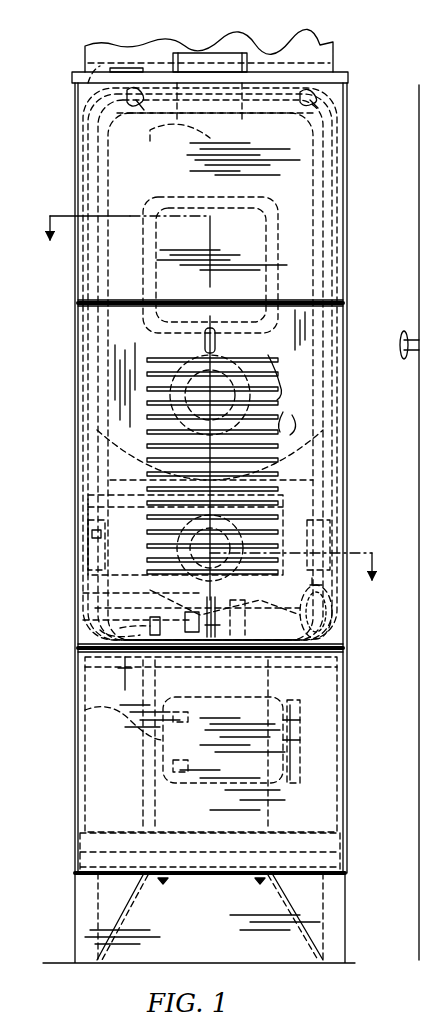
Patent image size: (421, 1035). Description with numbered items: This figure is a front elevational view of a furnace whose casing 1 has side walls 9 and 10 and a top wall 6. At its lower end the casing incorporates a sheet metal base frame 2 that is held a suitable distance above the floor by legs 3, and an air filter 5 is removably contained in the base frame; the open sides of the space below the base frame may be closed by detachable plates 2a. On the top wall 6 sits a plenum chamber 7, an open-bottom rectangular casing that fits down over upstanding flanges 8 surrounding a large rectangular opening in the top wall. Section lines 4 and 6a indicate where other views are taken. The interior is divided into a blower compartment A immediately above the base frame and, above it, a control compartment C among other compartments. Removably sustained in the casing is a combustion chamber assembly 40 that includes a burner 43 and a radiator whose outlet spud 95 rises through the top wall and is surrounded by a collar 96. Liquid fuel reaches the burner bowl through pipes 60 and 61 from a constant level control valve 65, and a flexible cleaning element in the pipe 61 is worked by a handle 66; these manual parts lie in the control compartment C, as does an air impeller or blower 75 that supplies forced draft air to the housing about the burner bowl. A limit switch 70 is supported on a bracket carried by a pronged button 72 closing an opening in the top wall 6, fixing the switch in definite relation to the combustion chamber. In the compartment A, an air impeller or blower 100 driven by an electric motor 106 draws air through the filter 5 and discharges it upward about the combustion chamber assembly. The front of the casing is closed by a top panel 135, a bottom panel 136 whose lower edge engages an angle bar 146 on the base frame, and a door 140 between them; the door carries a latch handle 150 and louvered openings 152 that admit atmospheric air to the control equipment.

The casing 1 is at (351, 266).
The base frame 2 is at (340, 882).
The plates 2a is at (200, 926).
The legs 3 is at (93, 912).
The section line 4- 4 is at (209, 414).
The air filter 5 is at (347, 846).
The top wall 6 is at (340, 20).
The section line 6a- 6a is at (347, 977).
The plenum chamber 7 is at (90, 56).
The upstanding flanges 8 is at (270, 62).
The side wall 9 is at (73, 378).
The side wall 10 is at (350, 381).
The combustion chamber assembly 40 is at (299, 184).
The burner 43 is at (125, 537).
The pipe 60 is at (152, 628).
The pipe 61 is at (250, 620).
The constant level control valve 65 is at (83, 595).
The handle 66 is at (196, 620).
The limit switch 70 is at (177, 130).
The button 72 is at (127, 72).
The air impeller or blower 75 is at (307, 580).
The outlet spud 95 is at (222, 52).
The collar 96 is at (188, 52).
The air impeller or blower 100 is at (163, 807).
The electric motor 106 is at (220, 710).
The top panel 135 is at (228, 190).
The bottom panel 136 is at (307, 790).
The door 140 is at (172, 358).
The angle bar 146 is at (208, 872).
The handle 150 is at (214, 333).
The louvered openings 152 is at (291, 385).
The blower compartment A is at (317, 691).
The control compartment C is at (420, 533).